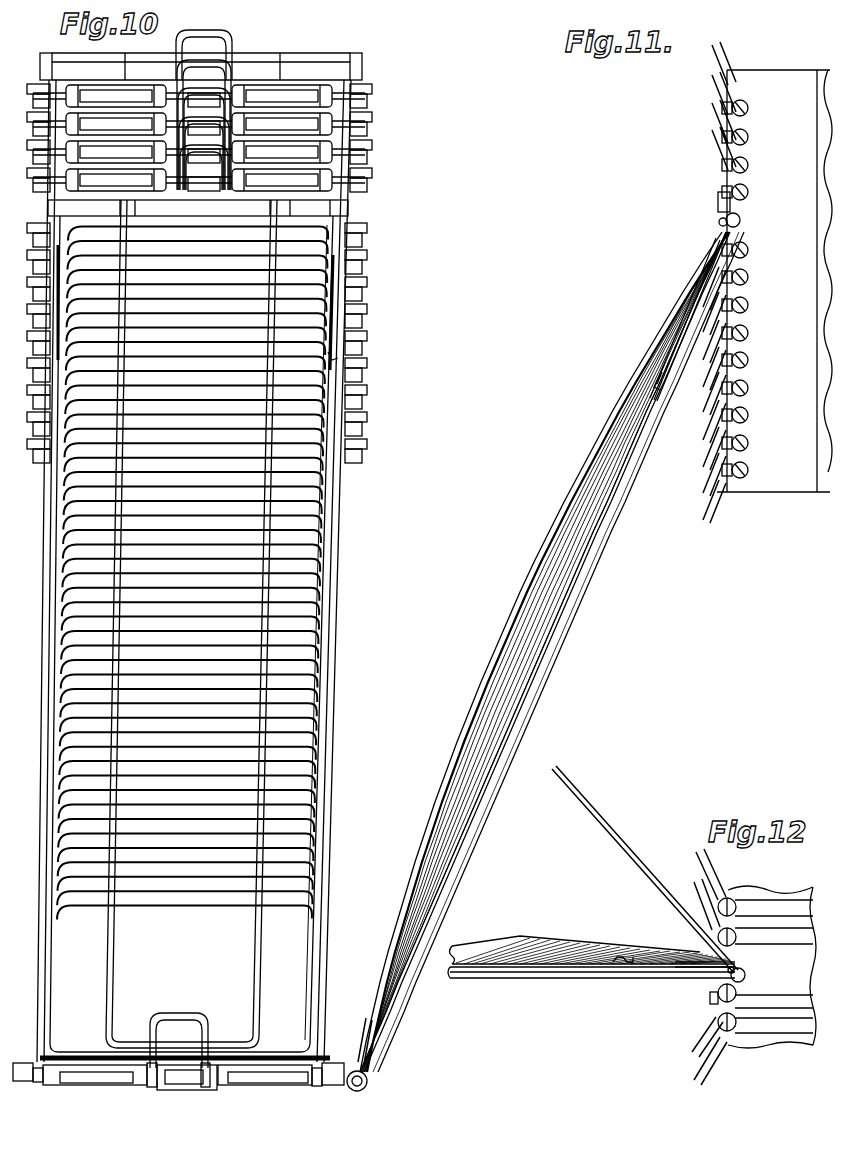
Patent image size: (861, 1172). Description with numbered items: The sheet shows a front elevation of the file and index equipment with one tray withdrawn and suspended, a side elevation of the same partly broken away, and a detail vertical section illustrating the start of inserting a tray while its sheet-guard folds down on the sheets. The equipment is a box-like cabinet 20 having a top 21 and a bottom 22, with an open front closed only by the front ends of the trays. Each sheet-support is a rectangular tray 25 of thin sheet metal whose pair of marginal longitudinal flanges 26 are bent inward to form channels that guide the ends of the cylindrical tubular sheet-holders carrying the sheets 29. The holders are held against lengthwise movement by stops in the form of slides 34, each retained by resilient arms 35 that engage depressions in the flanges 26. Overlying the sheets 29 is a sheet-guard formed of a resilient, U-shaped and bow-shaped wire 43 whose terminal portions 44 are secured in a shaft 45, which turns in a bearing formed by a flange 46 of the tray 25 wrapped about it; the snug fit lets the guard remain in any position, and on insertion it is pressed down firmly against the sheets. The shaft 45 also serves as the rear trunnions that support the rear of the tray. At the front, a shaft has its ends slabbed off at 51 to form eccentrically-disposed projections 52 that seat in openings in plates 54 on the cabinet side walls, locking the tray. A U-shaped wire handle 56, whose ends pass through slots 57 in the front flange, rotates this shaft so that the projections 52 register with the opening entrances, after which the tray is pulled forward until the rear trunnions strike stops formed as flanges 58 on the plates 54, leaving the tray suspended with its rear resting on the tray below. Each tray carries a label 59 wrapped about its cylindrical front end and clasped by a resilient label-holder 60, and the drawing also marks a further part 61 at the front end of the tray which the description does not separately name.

In FIG. 10, the cabinet 20 is at (201, 58).
In FIG. 10, the top 21 is at (284, 63).
In FIG. 11, the top 21 is at (795, 70).
In FIG. 11, the bottom 22 is at (795, 495).
In FIG. 10, the tray 25 is at (336, 632).
In FIG. 11, the tray 25 is at (554, 652).
In FIG. 12, the tray 25 is at (591, 985).
In FIG. 10, the marginal longitudinal flanges 26 is at (46, 591).
In FIG. 11, the marginal longitudinal flanges 26 is at (614, 573).
In FIG. 12, the marginal longitudinal flanges 26 is at (768, 908).
In FIG. 10, the sheets 29 is at (327, 521).
In FIG. 11, the sheets 29 is at (512, 641).
In FIG. 12, the sheets 29 is at (568, 945).
In FIG. 10, the slides 34 is at (360, 283).
In FIG. 11, the slides 34 is at (688, 298).
In FIG. 12, the slides 34 is at (688, 960).
In FIG. 10, the resilient arms 35 is at (340, 360).
In FIG. 11, the resilient arms 35 is at (660, 352).
In FIG. 12, the resilient arms 35 is at (628, 956).
In FIG. 10, the wire 43 is at (109, 951).
In FIG. 11, the wire 43 is at (450, 769).
In FIG. 12, the wire 43 is at (625, 850).
In FIG. 10, the terminal portions 44 is at (130, 218).
In FIG. 10, the shaft 45 is at (352, 210).
In FIG. 11, the shaft 45 is at (742, 223).
In FIG. 12, the shaft 45 is at (748, 976).
In FIG. 11, the flange 46 is at (719, 222).
In FIG. 12, the flange 46 is at (745, 971).
In FIG. 10, the slabbed-off terminal portions 51 is at (28, 1080).
In FIG. 11, the slabbed-off terminal portions 51 is at (748, 307).
In FIG. 12, the slabbed-off terminal portions 51 is at (728, 1032).
In FIG. 10, the eccentrically-disposed projections 52 is at (368, 95).
In FIG. 11, the eccentrically-disposed projections 52 is at (368, 1082).
In FIG. 12, the eccentrically-disposed projections 52 is at (731, 899).
In FIG. 10, the plates 54 is at (42, 62).
In FIG. 10, the handle 56 is at (232, 40).
In FIG. 11, the handle 56 is at (710, 58).
In FIG. 12, the handle 56 is at (708, 866).
In FIG. 10, the slots 57 is at (178, 1090).
In FIG. 10, the flanges (stops) 58 is at (368, 110).
In FIG. 11, the flanges (stops) 58 is at (718, 199).
In FIG. 12, the flanges (stops) 58 is at (710, 1000).
In FIG. 10, the label 59 is at (103, 92).
In FIG. 10, the label-holder 60 is at (152, 1089).
In FIG. 11, the label-holder 60 is at (365, 1090).
In FIG. 10, the inner sleeve 61 is at (305, 92).